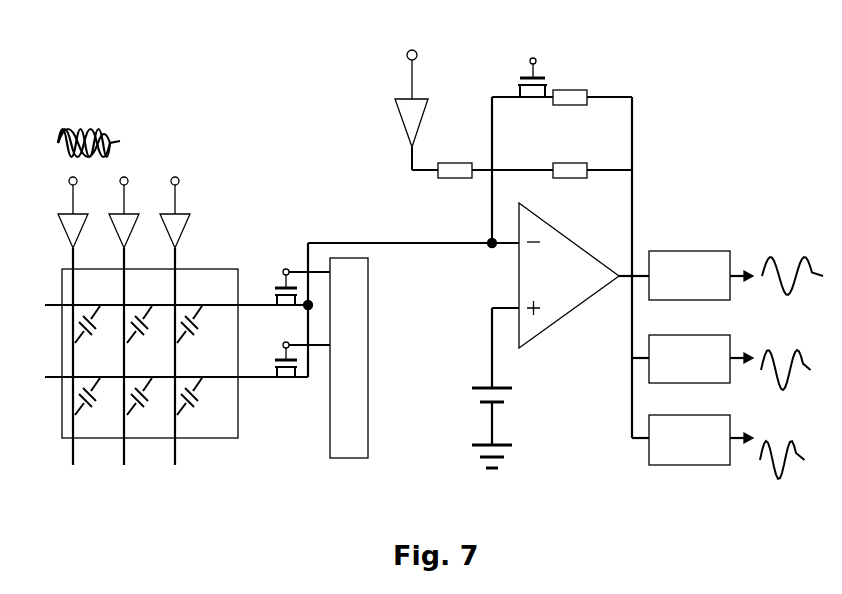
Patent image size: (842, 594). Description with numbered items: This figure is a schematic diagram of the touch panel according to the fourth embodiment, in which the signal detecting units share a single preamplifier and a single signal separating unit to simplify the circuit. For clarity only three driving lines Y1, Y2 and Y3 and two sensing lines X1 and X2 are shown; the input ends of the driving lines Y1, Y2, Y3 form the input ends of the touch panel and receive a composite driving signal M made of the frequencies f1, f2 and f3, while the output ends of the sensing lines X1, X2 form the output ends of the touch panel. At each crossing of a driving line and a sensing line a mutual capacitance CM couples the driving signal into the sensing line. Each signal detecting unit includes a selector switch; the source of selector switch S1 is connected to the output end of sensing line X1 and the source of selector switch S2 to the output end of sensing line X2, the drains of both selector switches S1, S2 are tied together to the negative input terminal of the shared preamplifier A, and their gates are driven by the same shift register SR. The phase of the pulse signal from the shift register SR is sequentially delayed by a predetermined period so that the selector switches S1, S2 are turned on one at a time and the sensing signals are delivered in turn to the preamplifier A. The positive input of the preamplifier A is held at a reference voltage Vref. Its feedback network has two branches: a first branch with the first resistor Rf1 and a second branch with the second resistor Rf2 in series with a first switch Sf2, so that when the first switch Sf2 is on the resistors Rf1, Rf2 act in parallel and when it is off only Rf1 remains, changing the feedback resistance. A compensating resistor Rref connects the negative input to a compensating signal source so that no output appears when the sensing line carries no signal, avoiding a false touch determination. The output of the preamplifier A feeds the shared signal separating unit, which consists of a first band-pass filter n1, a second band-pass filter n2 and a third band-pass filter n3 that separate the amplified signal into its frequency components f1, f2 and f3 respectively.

The multi-frequency driving signal M is at (88, 135).
The driving line Y1 is at (73, 338).
The driving line Y2 is at (124, 338).
The driving line Y3 is at (175, 338).
The sensing line X1 is at (161, 305).
The sensing line X2 is at (161, 377).
The mutual capacitance CM is at (144, 370).
The selector switch S1 is at (302, 273).
The selector switch S2 is at (302, 349).
The shift register SR is at (349, 374).
The compensating resistor Rref is at (474, 114).
The first resistor Rf1 is at (592, 158).
The second resistor Rf2 is at (592, 87).
The first switch Sf2 is at (522, 63).
The preamplifier A is at (570, 279).
The reference voltage Vref is at (514, 388).
The first band-pass filter n1 is at (701, 258).
The second band-pass filter n2 is at (692, 347).
The third band-pass filter n3 is at (692, 429).
The first frequency signal f1 is at (792, 265).
The second frequency signal f2 is at (786, 354).
The third frequency signal f3 is at (782, 445).